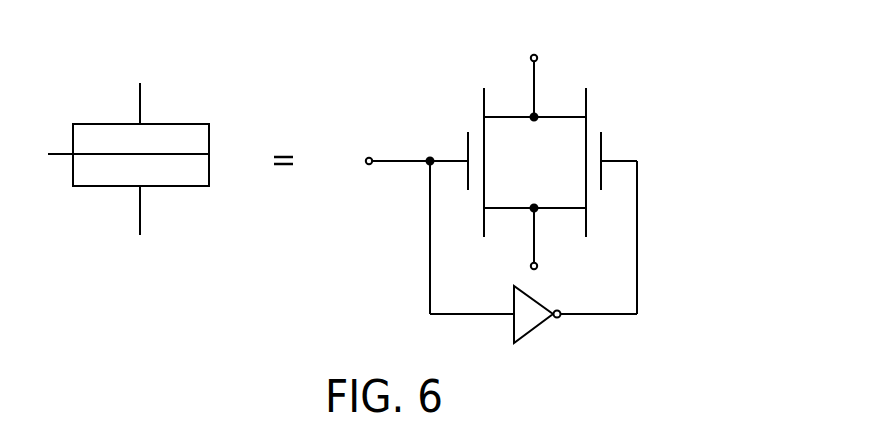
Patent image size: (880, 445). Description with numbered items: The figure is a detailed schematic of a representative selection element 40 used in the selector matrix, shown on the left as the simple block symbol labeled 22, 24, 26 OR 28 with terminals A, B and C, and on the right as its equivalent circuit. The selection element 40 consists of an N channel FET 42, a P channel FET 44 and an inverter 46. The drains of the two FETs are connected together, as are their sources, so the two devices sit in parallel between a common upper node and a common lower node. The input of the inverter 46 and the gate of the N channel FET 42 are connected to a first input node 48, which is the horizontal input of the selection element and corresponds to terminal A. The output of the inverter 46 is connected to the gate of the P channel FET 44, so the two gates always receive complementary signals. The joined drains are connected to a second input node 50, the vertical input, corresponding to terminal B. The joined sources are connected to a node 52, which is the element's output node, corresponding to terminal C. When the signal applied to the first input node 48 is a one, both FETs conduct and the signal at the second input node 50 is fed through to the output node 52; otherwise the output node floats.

The switch element (symbol) 22 is at (137, 192).
The switch element (symbol) 24 is at (137, 192).
The switch element (symbol) 26 is at (137, 192).
The switch element (symbol) 28 is at (80, 186).
The selection element 40 is at (723, 180).
The N channel FET 42 is at (425, 133).
The P channel FET 44 is at (645, 138).
The inverter 46 is at (533, 323).
The first input node 48 is at (369, 165).
The second input node 50 is at (538, 58).
The output node 52 is at (530, 265).